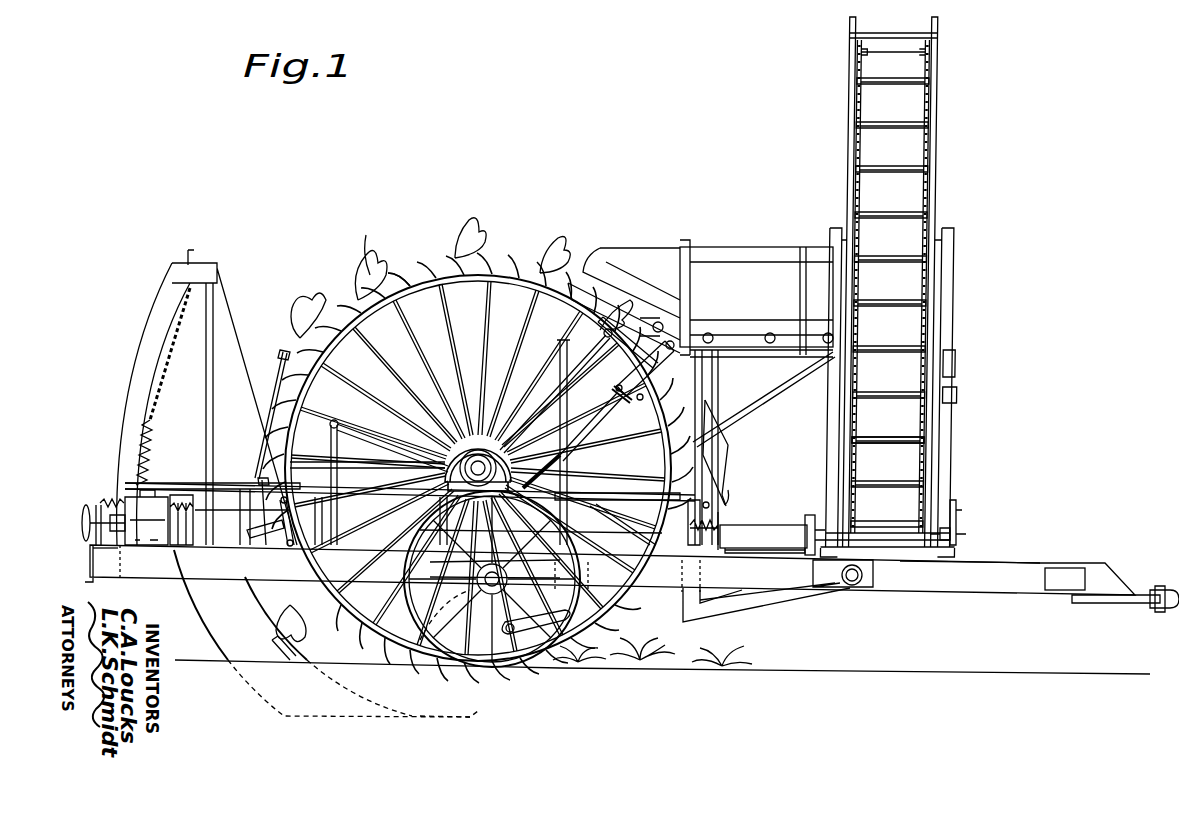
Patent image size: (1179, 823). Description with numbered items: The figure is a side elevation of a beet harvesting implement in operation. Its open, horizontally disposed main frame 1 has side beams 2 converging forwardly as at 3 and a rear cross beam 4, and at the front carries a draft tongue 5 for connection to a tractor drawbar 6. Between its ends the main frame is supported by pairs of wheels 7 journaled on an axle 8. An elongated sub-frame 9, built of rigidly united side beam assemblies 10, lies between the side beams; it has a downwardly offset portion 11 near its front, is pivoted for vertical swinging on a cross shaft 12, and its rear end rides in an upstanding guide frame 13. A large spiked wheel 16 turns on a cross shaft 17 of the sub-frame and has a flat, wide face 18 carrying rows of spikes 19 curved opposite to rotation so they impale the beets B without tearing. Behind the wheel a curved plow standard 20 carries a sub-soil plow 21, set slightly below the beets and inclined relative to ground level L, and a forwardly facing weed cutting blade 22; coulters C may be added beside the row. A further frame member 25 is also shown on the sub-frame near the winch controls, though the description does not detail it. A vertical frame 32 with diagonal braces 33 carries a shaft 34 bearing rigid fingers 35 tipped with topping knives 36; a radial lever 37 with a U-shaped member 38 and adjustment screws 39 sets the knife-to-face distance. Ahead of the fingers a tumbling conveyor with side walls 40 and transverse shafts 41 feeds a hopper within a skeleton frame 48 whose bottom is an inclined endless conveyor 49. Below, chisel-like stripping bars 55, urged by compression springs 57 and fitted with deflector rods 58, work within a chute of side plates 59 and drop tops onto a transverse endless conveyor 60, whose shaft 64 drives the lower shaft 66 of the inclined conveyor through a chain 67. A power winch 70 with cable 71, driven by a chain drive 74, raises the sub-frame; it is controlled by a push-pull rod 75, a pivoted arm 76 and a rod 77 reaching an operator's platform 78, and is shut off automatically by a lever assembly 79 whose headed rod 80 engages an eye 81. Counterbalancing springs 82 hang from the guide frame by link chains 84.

The main frame 1 is at (1058, 565).
The side beams 2 is at (276, 578).
The forwardly converging portion 3 is at (1010, 587).
The rear cross beam 4 is at (117, 565).
The draft tongue 5 is at (1108, 604).
The tractor drawbar 6 is at (1160, 610).
The wheels 7 is at (580, 572).
The axle 8 is at (490, 566).
The sub-frame 9 is at (657, 587).
The side beam assemblies 10 is at (372, 547).
The downwardly offset portion 11 is at (741, 602).
The cross shaft 12 is at (855, 588).
The upstanding guide frame 13 is at (212, 330).
The spiked wheel 16 is at (469, 290).
The cross shaft 17 is at (522, 408).
The wheel face 18 is at (410, 278).
The spikes 19 is at (520, 275).
The plow standard 20 is at (213, 622).
The sub-soil plow 21 is at (472, 708).
The weed cutting blade 22 is at (282, 655).
The bearing rail 25 is at (222, 496).
The vertical frame 32 is at (778, 372).
The diagonal braces 33 is at (600, 430).
The transverse shaft 34 is at (672, 343).
The rigid fingers 35 is at (626, 318).
The topping knives 36 is at (572, 275).
The radial lever 37 is at (640, 370).
The U-shaped member 38 is at (650, 402).
The adjustment screws 39 is at (617, 389).
The side walls 40 is at (745, 275).
The horizontal transverse shafts 41 is at (770, 333).
The skeleton frame 48 is at (940, 300).
The endless conveyor 49 is at (915, 437).
The stripping bars 55 is at (712, 475).
The compression spring 57 is at (702, 535).
The deflector rod 58 is at (730, 487).
The side plates 59 is at (722, 445).
The endless conveyor 60 is at (750, 530).
The conveyor shaft 64 is at (808, 556).
The lower shaft 66 is at (958, 512).
The endless chain 67 is at (962, 535).
The power winch 70 is at (192, 526).
The cable 71 is at (207, 385).
The endless chain drive 74 is at (92, 520).
The push-pull rod 75 is at (318, 550).
The pivotally mounted arm 76 is at (330, 440).
The control rod 77 is at (535, 352).
The operator's platform 78 is at (628, 495).
The lever assembly 79 is at (284, 528).
The headed rod 80 is at (283, 372).
The eye 81 is at (262, 480).
The counterbalancing springs 82 is at (135, 425).
The link chains 84 is at (172, 340).
The beets B is at (306, 332).
The coulters C is at (470, 640).
The ground level L is at (788, 670).